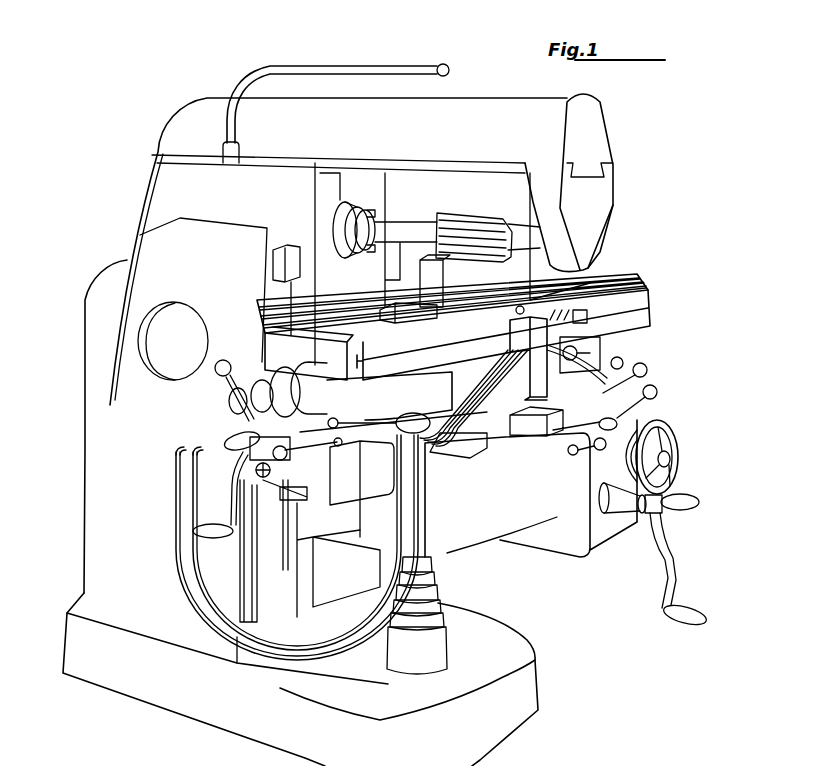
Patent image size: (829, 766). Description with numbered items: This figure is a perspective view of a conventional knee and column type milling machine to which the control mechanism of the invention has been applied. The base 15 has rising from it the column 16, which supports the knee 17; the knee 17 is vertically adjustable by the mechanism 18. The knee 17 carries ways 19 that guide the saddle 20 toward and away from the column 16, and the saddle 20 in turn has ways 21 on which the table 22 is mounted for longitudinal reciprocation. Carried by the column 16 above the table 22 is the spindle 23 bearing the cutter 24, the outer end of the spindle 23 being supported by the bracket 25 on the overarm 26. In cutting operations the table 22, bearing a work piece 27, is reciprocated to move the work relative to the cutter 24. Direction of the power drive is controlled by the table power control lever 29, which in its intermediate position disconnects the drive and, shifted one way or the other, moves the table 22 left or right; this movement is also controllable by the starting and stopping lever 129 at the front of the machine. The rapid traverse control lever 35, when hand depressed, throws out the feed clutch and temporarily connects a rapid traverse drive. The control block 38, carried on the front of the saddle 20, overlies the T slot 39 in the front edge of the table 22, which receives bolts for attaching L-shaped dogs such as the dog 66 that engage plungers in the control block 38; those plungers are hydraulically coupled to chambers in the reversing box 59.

The base 15 is at (517, 720).
The column 16 is at (84, 593).
The knee 17 is at (560, 548).
The knee adjusting mechanism 18 is at (440, 585).
The ways 19 is at (550, 433).
The saddle 20 is at (483, 447).
The ways 21 is at (395, 387).
The table 22 is at (590, 284).
The spindle 23 is at (420, 216).
The cutter 24 is at (500, 220).
The bracket 25 is at (603, 192).
The overarm 26 is at (598, 118).
The work piece 27 is at (432, 297).
The table power control lever 29 is at (330, 434).
The rapid traverse control lever 35 is at (622, 360).
The control block 38 is at (510, 322).
The T slot 39 is at (632, 297).
The reversing box 59 is at (397, 420).
The L-shaped dog 66 is at (647, 305).
The starting and stopping lever 129 is at (632, 347).